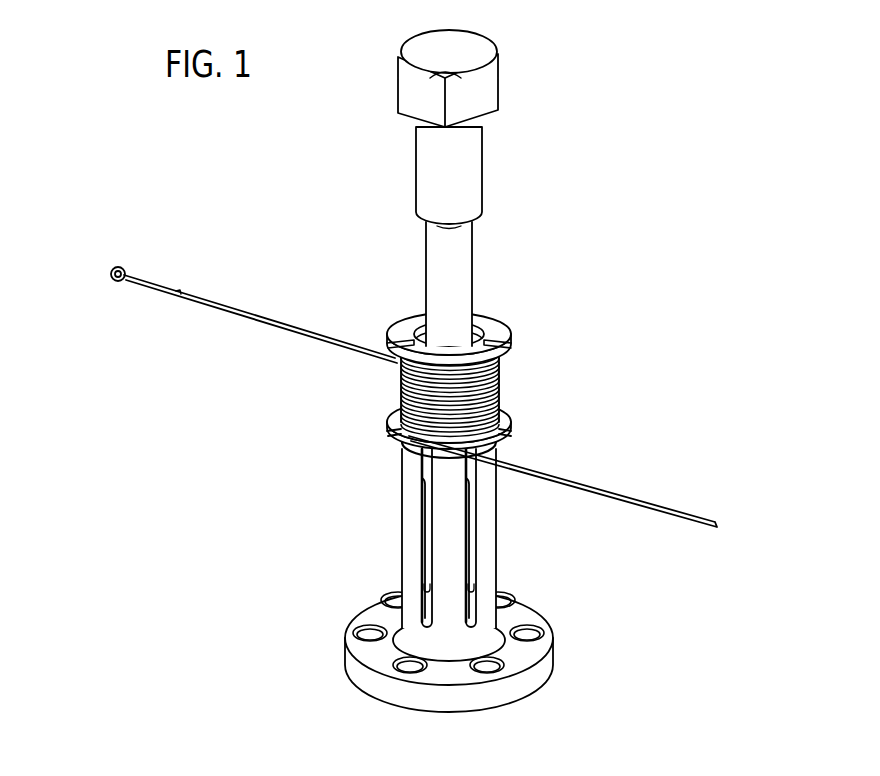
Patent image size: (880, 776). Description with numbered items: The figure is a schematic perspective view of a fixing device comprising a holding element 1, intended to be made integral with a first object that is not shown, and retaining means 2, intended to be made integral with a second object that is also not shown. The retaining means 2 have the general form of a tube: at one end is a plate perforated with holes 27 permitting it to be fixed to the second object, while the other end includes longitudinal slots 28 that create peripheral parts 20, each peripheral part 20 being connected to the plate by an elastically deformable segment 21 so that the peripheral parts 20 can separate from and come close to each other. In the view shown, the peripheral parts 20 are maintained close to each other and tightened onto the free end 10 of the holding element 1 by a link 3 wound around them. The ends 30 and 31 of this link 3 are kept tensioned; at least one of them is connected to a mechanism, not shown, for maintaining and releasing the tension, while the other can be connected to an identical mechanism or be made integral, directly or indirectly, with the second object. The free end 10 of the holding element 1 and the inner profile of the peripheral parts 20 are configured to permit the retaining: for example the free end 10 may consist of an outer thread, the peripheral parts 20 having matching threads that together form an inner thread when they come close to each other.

The holding element 1 is at (459, 272).
The retaining means 2 is at (345, 575).
The link 3 is at (487, 402).
The free end 10 is at (396, 361).
The peripheral parts 20 is at (492, 352).
The elastically deformable segment 21 is at (447, 562).
The holes 27 is at (487, 668).
The longitudinal slots 28 is at (435, 345).
The end of the link 30 is at (115, 283).
The end of the link 31 is at (712, 517).